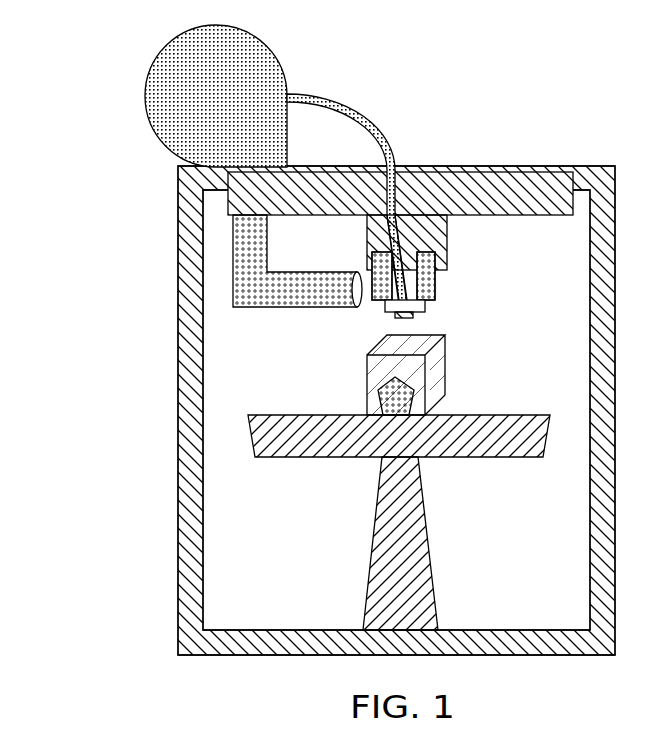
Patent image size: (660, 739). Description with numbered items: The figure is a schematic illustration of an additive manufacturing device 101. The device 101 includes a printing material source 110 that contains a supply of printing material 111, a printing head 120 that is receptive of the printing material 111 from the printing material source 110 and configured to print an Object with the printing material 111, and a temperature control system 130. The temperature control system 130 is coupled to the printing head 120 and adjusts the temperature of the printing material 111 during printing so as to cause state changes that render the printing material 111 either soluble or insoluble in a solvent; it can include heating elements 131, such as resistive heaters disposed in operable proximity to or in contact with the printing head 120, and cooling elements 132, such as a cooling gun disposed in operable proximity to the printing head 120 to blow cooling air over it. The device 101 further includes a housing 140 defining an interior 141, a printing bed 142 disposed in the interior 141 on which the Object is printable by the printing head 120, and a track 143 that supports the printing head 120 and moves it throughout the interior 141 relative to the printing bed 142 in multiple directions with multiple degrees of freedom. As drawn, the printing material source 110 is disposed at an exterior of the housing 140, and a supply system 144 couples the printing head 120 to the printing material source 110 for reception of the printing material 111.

The additive manufacturing device 101 is at (363, 365).
The printing material source 110 is at (173, 96).
The printing material 111 is at (231, 116).
The printing head 120 is at (430, 312).
The temperature control system 130 is at (440, 283).
The heating elements 131 is at (384, 306).
The cooling elements 132 is at (228, 264).
The housing 140 is at (178, 221).
The interior 141 is at (305, 562).
The printing bed 142 is at (248, 444).
The track 143 is at (440, 206).
The supply system 144 is at (349, 108).
The object Object is at (420, 390).